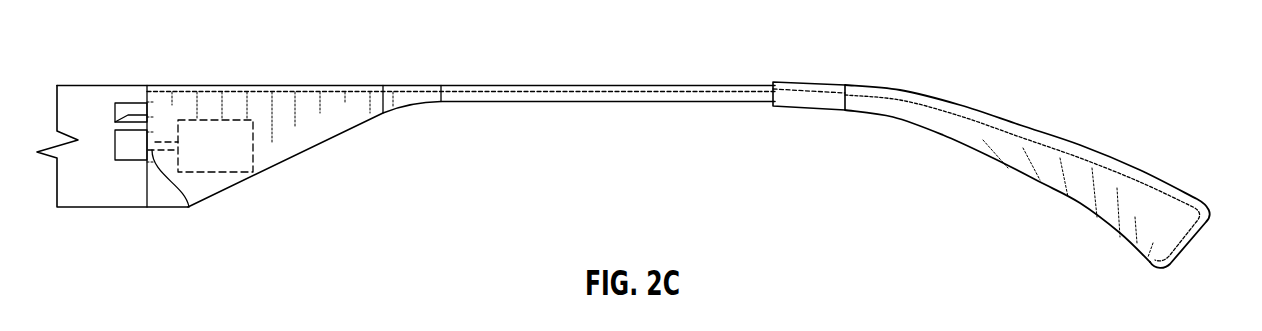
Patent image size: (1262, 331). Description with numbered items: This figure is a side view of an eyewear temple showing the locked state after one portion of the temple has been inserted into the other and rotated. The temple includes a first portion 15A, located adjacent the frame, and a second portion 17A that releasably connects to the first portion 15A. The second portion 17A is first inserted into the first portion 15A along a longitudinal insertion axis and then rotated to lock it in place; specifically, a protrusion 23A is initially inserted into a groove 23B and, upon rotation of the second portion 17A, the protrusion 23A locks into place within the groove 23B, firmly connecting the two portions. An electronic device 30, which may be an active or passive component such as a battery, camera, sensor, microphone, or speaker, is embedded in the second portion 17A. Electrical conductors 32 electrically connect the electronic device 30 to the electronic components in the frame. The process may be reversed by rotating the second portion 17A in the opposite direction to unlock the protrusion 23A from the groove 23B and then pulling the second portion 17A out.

The first portion 15A is at (68, 85).
The second portion 17A is at (678, 85).
The protrusion 23A is at (148, 88).
The groove 23B is at (137, 103).
The electronic device 30 is at (225, 119).
The electrical conductors 32 is at (189, 207).